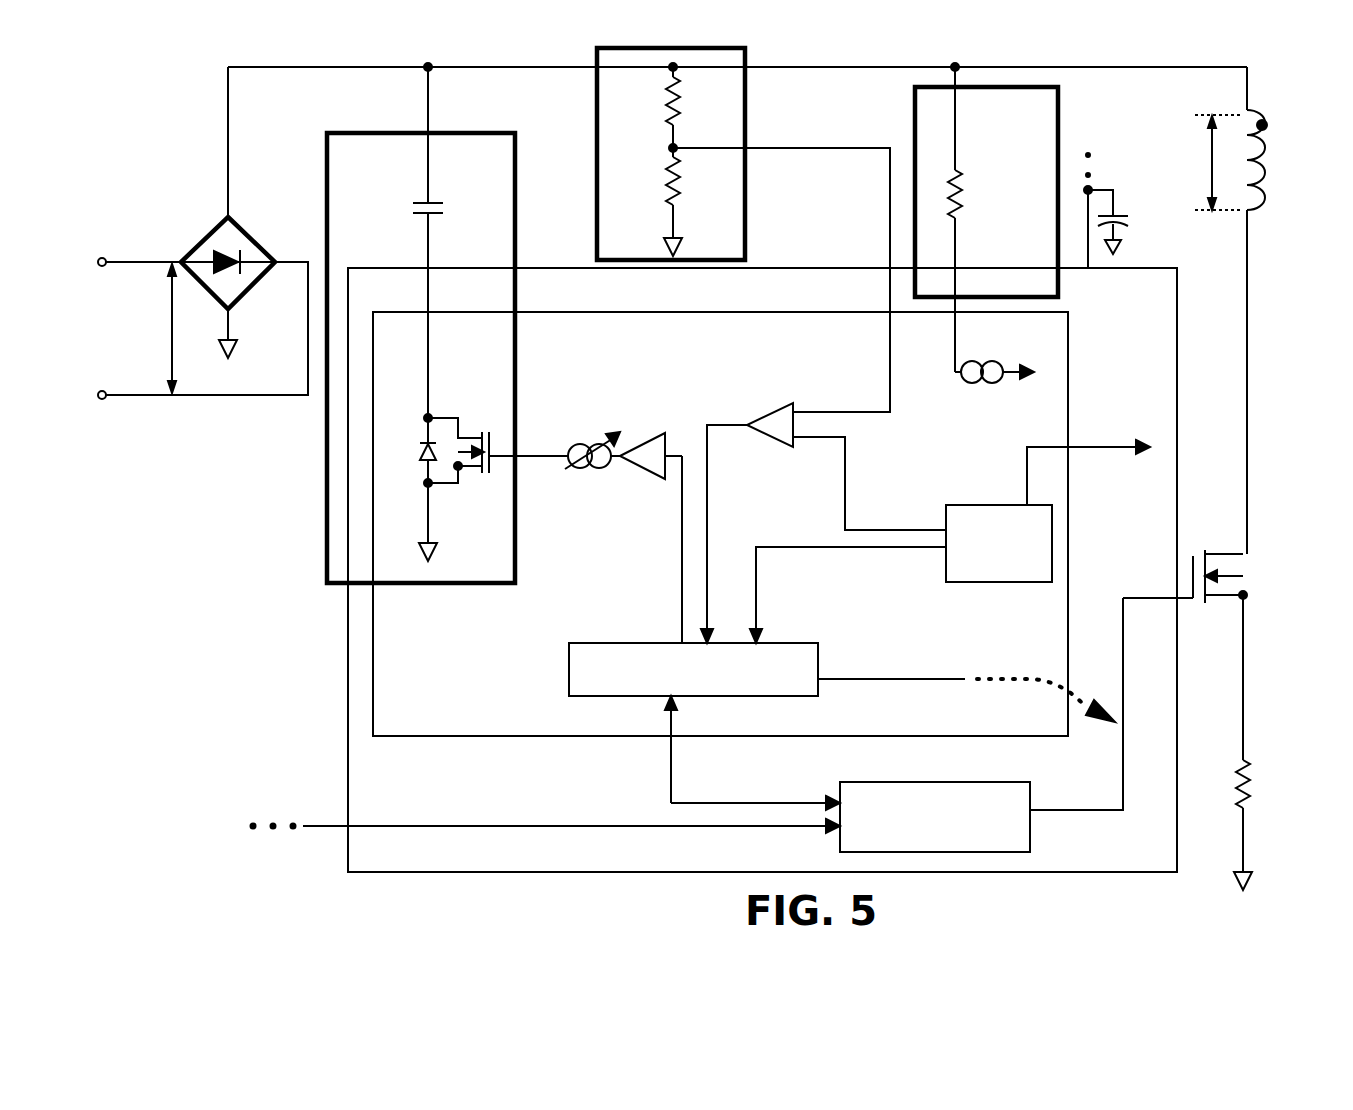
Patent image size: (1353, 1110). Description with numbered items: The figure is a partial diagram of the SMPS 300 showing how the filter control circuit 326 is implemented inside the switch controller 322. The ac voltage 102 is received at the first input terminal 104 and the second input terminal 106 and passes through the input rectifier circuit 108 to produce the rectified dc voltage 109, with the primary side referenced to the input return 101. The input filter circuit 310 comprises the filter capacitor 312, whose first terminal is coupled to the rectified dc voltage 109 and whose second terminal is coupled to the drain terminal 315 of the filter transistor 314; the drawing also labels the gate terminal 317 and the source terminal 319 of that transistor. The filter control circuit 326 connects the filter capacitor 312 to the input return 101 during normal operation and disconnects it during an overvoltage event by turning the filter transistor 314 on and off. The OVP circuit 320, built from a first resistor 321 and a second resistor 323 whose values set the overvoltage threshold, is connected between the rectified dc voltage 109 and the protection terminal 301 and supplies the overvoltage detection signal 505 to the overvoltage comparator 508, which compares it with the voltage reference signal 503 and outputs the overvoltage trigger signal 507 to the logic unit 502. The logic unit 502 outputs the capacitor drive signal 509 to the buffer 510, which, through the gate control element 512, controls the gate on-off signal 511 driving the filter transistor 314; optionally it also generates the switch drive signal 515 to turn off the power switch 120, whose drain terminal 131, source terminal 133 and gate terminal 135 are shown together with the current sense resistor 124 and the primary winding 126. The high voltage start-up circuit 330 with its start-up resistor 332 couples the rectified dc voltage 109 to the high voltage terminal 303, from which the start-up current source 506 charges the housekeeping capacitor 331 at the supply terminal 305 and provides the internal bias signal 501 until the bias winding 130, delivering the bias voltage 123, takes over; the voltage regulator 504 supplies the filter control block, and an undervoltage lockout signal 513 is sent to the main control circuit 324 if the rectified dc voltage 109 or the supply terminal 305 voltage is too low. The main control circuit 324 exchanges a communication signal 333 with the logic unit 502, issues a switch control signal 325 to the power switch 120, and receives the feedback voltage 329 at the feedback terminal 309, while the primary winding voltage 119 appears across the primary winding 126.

The SMPS 300 is at (858, 40).
The rectified dc voltage Vdc 109 is at (380, 40).
The input rectifier circuit 108 is at (240, 226).
The input terminal ac1 104 is at (98, 231).
The input terminal ac2 106 is at (105, 425).
The ac voltage Vac 102 is at (196, 344).
The input filter circuit 310 is at (421, 358).
The filter capacitor C1 312 is at (413, 201).
The filter transistor Q1 314 is at (398, 458).
The drain terminal 315 is at (450, 406).
The gate terminal of Q1 317 is at (492, 425).
The source terminal of Q1 319 is at (445, 505).
The input return 101 is at (422, 542).
The on_off signal 511 is at (535, 436).
The gate control element Igate 512 is at (586, 441).
The buffer or driver 510 is at (638, 436).
The capacitor drive signal cap_drive 509 is at (672, 570).
The OVP circuit 320 is at (671, 154).
The resistor R3 321 is at (686, 114).
The resistor R4 323 is at (662, 180).
The terminal PRO 301 is at (842, 286).
The HV start-up circuit 330 is at (986, 192).
The resistor R5 332 is at (973, 187).
The terminal HV 303 is at (992, 256).
The current source Istart 506 is at (989, 366).
The bias voltage Vb 123 is at (1102, 103).
The second primary side inductor L3 130 is at (1101, 153).
The terminal Vcc 305 is at (1110, 288).
The capacitor C2 331 is at (1120, 217).
The primary winding voltage Vp 119 is at (1196, 175).
The first primary side inductor L1 126 is at (1246, 174).
The power switch S1 120 is at (1254, 556).
The drain terminal 131 is at (1250, 528).
The source terminal 133 is at (1250, 631).
The gate terminal 135 is at (1220, 702).
The current sense resistor Rsense 124 is at (1256, 782).
The overvoltage detection signal ovp_det 505 is at (884, 378).
The overvoltage trigger signal ovp_trig 507 is at (733, 432).
The overvoltage comparator 508 is at (775, 445).
The voltage reference signal Vref1 503 is at (848, 453).
The voltage regulator Vsupply 504 is at (999, 543).
The internal bias signal 501 is at (927, 558).
The UVLO signal 513 is at (1116, 440).
The logic unit 502 is at (693, 669).
The switch drive signal 515 is at (976, 652).
The filter control circuit 326 is at (720, 524).
The communication signal 333 is at (675, 774).
The main control circuit 324 is at (935, 817).
The switch control signal 325 is at (1061, 800).
The switch controller U1 322 is at (762, 570).
The terminal FB 309 is at (371, 792).
The feedback voltage Vfb 329 is at (328, 836).